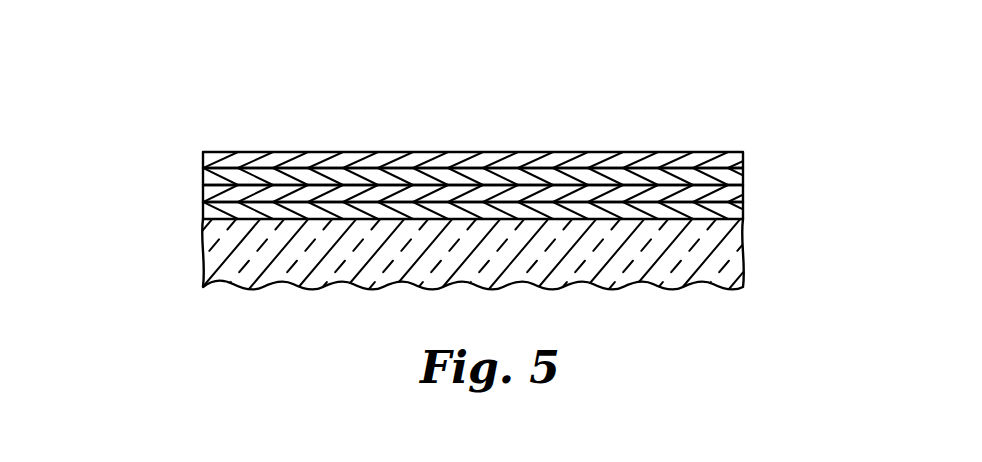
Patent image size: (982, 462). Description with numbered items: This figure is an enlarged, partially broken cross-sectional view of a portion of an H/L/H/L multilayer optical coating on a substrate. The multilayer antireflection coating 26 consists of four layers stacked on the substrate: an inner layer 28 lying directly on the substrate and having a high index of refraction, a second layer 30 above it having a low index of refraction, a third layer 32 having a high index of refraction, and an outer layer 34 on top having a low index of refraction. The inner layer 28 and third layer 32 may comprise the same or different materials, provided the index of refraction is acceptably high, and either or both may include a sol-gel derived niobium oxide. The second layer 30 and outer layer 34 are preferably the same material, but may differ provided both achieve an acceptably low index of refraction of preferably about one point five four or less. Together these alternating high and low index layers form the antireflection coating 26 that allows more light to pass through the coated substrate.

The multilayer antireflection coating 26 is at (465, 175).
The inner layer 28 is at (205, 208).
The second layer 30 is at (210, 193).
The third layer 32 is at (378, 177).
The outer layer 34 is at (579, 162).